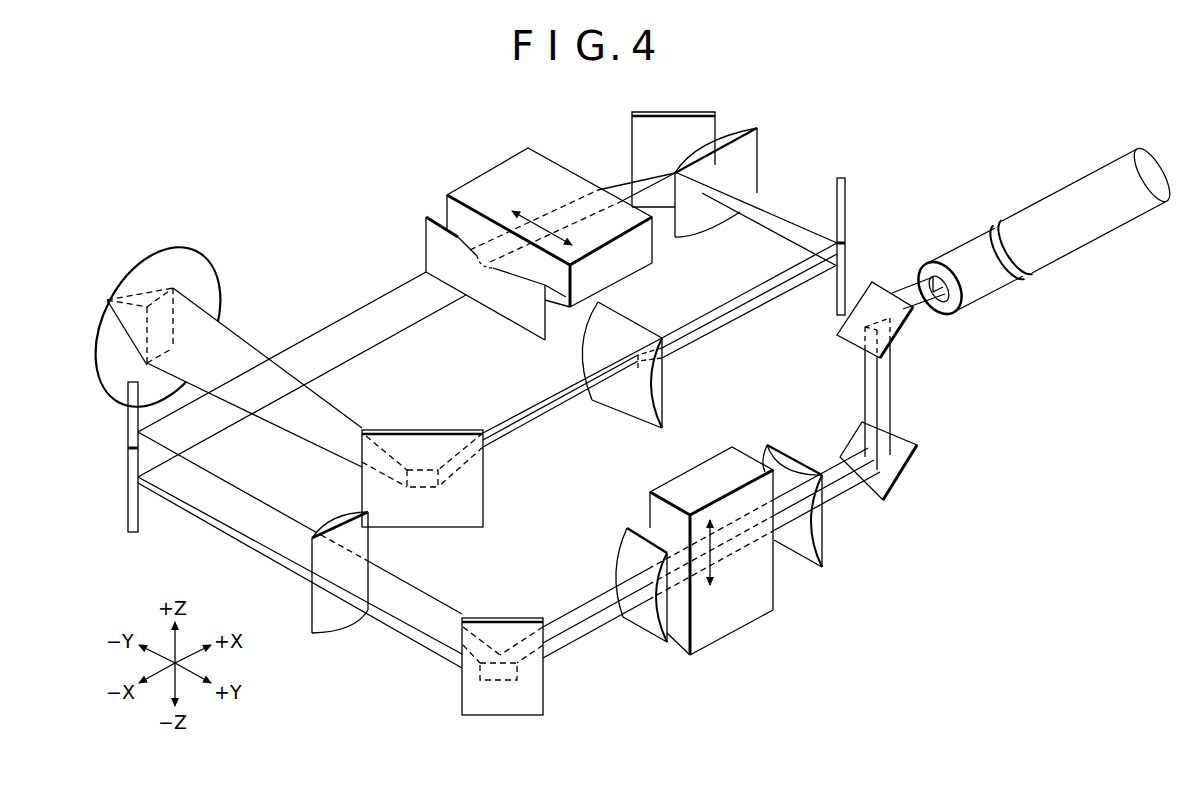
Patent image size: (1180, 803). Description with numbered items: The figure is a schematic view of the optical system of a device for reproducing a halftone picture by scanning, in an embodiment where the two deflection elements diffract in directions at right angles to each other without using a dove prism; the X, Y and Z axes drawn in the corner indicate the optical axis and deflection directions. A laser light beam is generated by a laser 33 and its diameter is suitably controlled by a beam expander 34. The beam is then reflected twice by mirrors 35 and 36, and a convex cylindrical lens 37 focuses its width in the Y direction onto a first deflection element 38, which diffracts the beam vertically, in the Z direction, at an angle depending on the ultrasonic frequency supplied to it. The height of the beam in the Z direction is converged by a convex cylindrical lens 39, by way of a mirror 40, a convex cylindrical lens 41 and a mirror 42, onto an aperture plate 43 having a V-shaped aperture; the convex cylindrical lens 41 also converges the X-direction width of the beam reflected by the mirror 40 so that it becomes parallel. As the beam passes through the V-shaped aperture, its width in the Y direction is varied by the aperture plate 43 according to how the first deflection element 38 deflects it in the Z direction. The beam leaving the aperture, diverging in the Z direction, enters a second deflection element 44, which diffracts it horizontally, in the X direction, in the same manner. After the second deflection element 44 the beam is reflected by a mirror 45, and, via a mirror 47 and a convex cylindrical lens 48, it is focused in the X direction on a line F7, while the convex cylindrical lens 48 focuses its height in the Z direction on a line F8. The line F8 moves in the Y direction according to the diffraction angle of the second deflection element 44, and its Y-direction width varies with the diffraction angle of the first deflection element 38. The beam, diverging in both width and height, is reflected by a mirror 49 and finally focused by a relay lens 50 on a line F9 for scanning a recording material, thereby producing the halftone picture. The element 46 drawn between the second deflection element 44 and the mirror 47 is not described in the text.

The laser 33 is at (1057, 192).
The beam expander 34 is at (958, 250).
The mirror 35 is at (904, 337).
The mirror 36 is at (907, 435).
The convex cylindrical lens 37 is at (822, 535).
The first deflection element 38 is at (743, 627).
The convex cylindrical lens 39 is at (627, 565).
The mirror 40 is at (503, 618).
The convex cylindrical lens 41 is at (312, 608).
The mirror 42 is at (128, 500).
The aperture plate 43 is at (507, 313).
The second deflection element 44 is at (493, 168).
The mirror 45 is at (632, 131).
The cylindrical lens 46 is at (757, 160).
The mirror 47 is at (846, 205).
The convex cylindrical lens 48 is at (663, 393).
The mirror 49 is at (485, 508).
The relay lens 50 is at (214, 282).
The focal line F7 is at (576, 388).
The focal line F8 is at (503, 433).
The focal line F9 is at (108, 300).